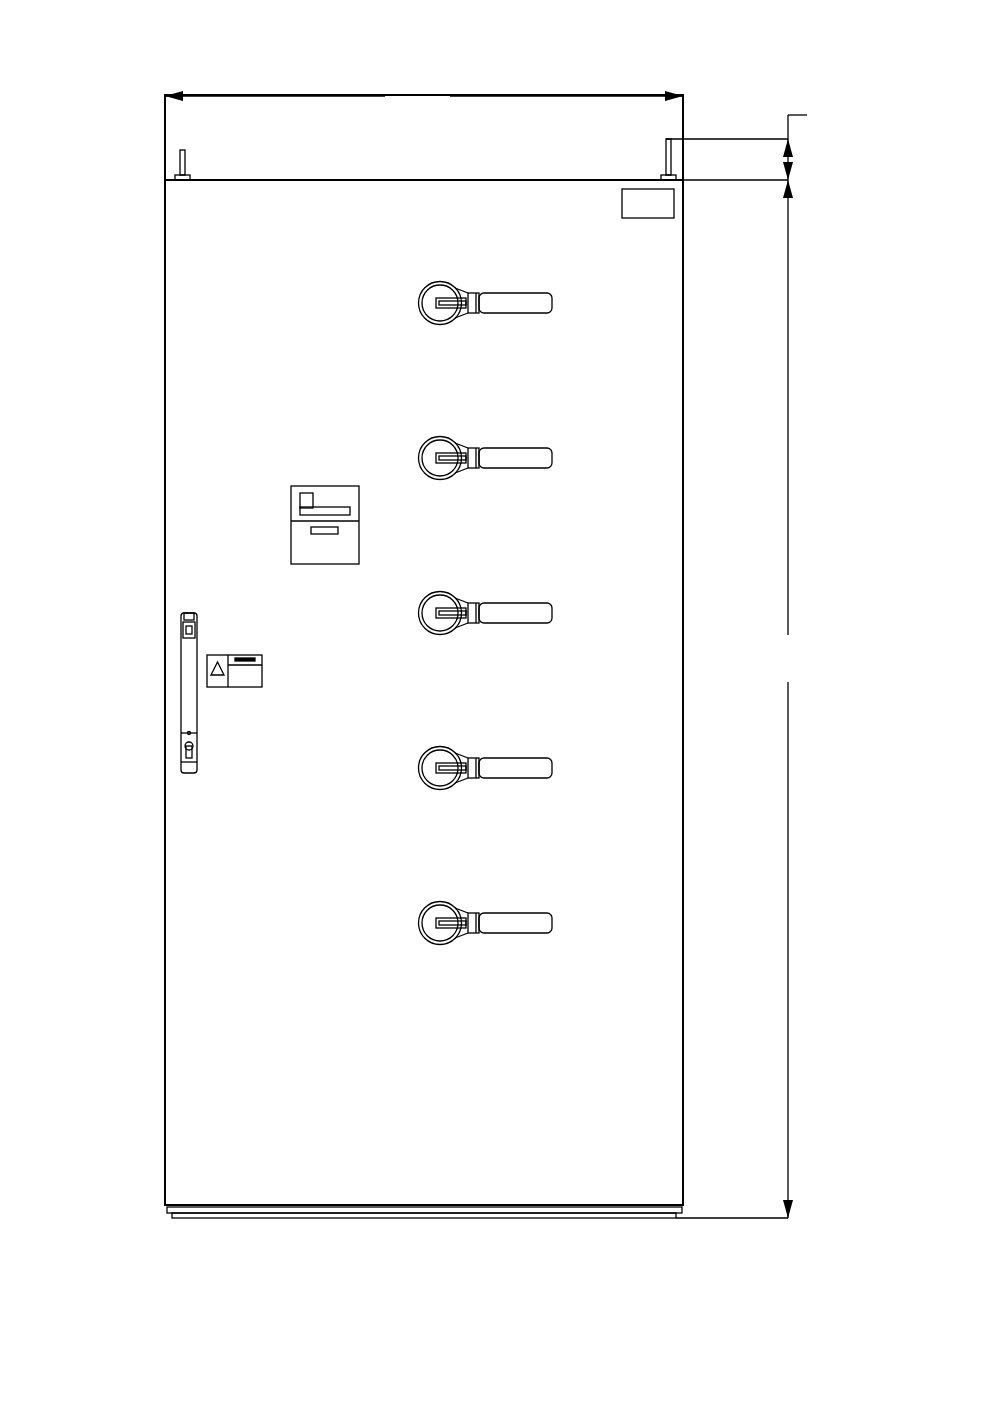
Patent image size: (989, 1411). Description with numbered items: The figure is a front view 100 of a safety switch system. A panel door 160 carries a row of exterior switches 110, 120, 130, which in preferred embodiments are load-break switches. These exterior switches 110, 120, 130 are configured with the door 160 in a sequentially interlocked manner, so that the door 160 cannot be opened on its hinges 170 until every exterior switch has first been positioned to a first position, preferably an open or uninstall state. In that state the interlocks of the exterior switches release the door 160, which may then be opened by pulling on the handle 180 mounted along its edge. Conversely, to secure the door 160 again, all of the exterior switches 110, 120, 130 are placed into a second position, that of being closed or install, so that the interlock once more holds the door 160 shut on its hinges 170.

The front view 100 is at (95, 70).
The exterior switch 110 is at (430, 296).
The exterior switch 120 is at (430, 451).
The exterior switch 130 is at (440, 913).
The panel door 160 is at (670, 296).
The hinges 170 is at (650, 179).
The handle 180 is at (180, 675).